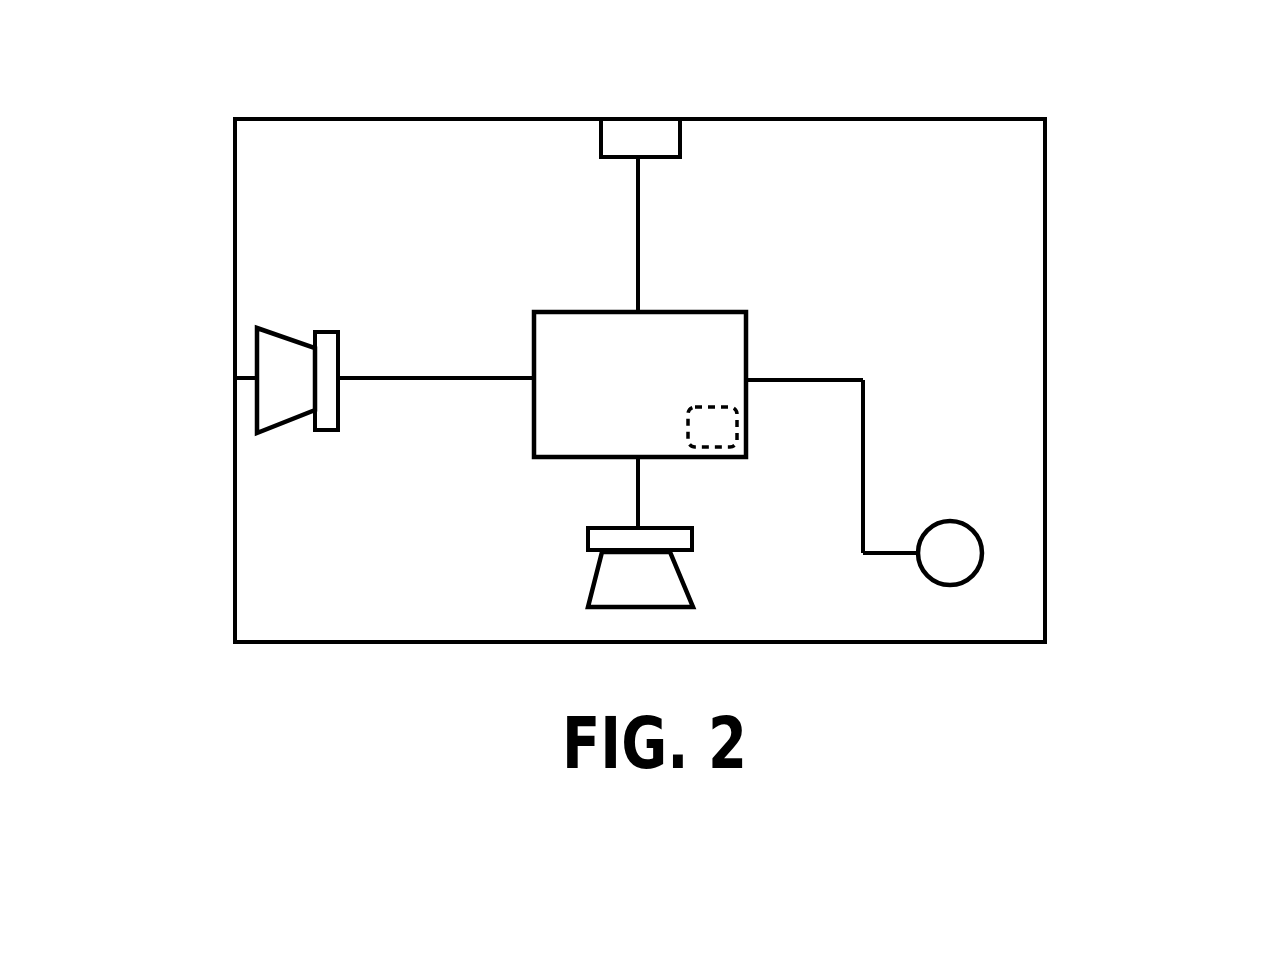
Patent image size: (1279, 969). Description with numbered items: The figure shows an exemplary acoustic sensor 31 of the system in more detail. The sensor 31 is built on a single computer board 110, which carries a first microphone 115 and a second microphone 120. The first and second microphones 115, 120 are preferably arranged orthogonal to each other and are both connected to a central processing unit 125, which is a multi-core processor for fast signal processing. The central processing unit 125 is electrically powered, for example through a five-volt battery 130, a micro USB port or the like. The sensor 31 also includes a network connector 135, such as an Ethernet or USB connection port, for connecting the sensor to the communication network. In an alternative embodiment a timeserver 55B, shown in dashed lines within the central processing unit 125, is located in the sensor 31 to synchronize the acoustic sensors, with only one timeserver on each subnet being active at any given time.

The sensor 31 is at (1107, 150).
The single computer board 110 is at (1045, 317).
The first microphone 115 is at (235, 370).
The second microphone 120 is at (690, 592).
The central processing unit (CPU) 125 is at (750, 335).
The 5V battery 130 is at (982, 553).
The network connector 135 is at (680, 140).
The timeserver 55B is at (722, 450).